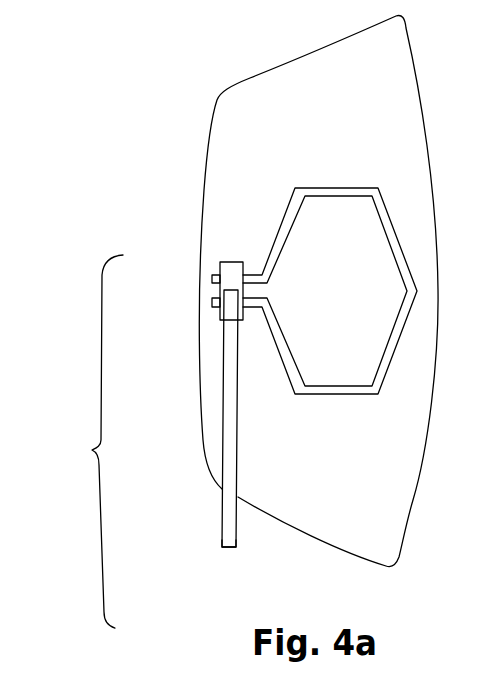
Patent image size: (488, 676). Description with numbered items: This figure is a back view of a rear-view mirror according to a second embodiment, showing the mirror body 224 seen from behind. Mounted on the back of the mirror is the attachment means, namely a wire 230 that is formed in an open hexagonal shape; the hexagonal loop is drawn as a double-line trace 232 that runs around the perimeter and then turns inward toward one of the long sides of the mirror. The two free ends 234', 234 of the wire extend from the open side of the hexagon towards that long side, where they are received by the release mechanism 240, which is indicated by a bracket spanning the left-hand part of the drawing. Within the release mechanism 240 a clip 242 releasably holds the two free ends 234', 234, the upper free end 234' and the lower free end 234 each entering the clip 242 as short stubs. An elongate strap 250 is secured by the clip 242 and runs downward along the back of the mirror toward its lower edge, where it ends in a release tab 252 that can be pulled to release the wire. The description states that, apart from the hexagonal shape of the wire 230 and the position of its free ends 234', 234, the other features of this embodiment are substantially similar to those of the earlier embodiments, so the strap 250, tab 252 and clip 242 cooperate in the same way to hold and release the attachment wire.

The housing cover 224 is at (328, 88).
The wire 230 is at (320, 256).
The antenna radiating element 232 is at (315, 186).
The release mechanism 240 is at (128, 424).
The feed block 242 is at (232, 262).
The free end 234' is at (183, 271).
The free end 234 is at (183, 312).
The feed cable 250 is at (222, 390).
The cable end connector 252 is at (228, 535).